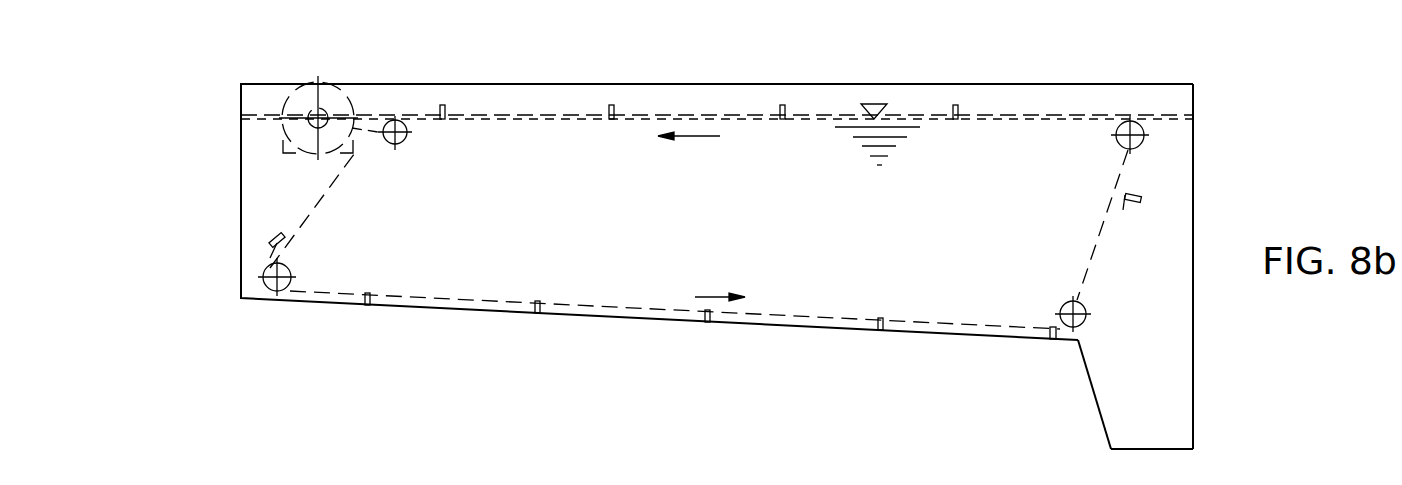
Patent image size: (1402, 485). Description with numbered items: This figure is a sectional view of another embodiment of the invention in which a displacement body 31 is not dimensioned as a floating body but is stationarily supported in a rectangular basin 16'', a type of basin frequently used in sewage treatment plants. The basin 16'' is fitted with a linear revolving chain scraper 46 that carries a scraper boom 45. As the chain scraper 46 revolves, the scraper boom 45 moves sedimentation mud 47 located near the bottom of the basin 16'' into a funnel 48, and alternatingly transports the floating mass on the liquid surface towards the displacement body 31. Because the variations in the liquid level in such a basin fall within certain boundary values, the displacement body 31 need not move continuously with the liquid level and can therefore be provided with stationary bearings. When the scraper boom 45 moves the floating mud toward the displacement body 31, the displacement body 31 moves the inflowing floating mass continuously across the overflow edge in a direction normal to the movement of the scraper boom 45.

The displacement body 31 is at (322, 116).
The scraper boom 45 is at (612, 110).
The revolving chain scraper 46 is at (925, 118).
The rectangular basin 16'' is at (717, 239).
The sedimentation mud 47 is at (1193, 405).
The funnel 48 is at (1147, 383).